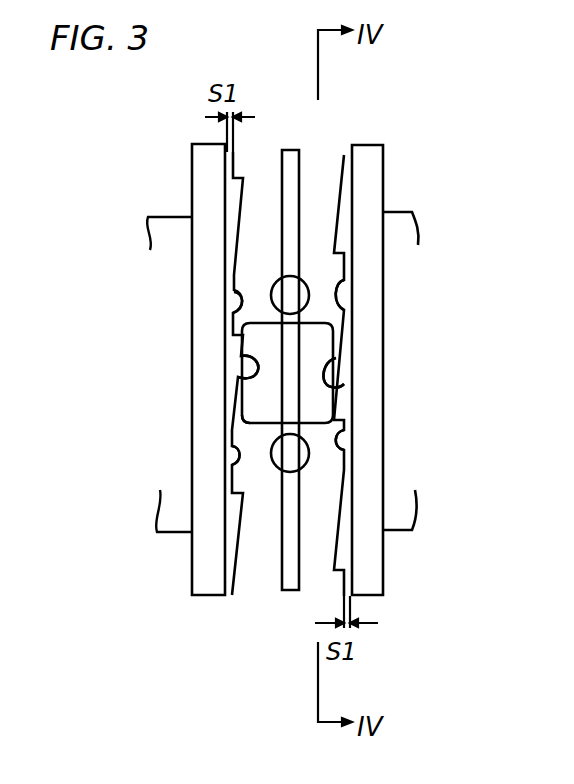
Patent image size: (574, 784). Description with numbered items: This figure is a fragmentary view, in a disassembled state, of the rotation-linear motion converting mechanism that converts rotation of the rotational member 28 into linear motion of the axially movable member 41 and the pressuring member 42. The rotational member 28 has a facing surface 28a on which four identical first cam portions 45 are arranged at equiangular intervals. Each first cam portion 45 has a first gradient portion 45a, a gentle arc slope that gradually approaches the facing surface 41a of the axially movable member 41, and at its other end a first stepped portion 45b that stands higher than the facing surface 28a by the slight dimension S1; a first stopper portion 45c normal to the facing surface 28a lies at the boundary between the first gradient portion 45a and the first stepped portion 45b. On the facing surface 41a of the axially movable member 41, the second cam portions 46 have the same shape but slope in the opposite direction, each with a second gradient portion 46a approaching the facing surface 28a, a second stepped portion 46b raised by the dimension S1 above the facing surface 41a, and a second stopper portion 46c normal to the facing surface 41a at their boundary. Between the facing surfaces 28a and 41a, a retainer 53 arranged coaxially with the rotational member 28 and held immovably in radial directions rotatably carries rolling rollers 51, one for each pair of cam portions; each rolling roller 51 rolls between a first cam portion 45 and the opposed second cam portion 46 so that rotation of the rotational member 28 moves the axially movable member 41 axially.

The rotational member 28 is at (364, 172).
The facing surface of the rotational member 28a is at (340, 297).
The axially movable member 41 is at (205, 177).
The facing surface of the axially movable member 41a is at (236, 456).
The pressuring member 42 is at (168, 530).
The first cam portion 45 is at (330, 190).
The first gradient portion 45a is at (326, 376).
The first stepped portion 45b is at (336, 441).
The first stopper portion 45c is at (246, 423).
The second cam portion 46 is at (241, 562).
The second gradient portion 46a is at (250, 372).
The second stepped portion 46b is at (238, 302).
The second stopper portion 46c is at (333, 328).
The rolling roller 51 is at (272, 288).
The retainer 53 is at (290, 594).